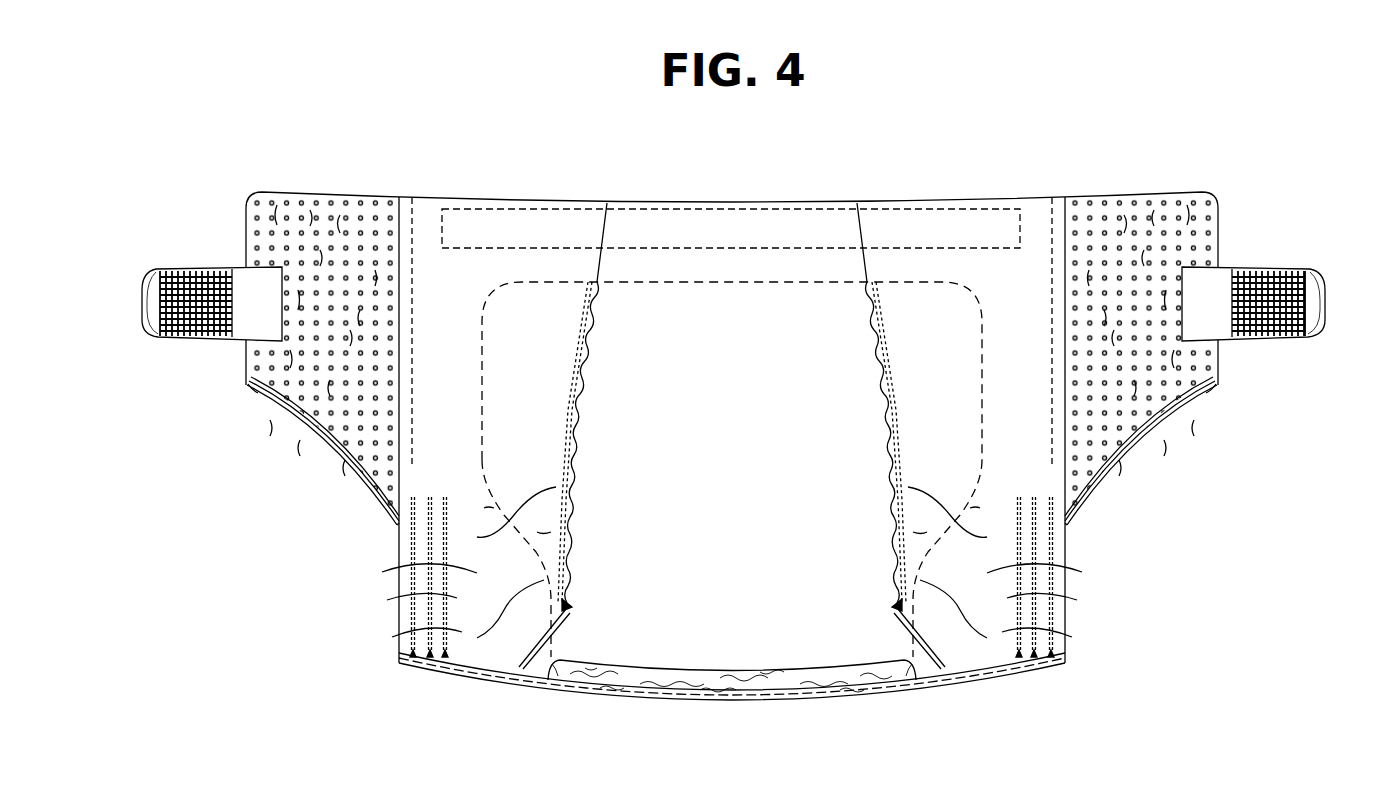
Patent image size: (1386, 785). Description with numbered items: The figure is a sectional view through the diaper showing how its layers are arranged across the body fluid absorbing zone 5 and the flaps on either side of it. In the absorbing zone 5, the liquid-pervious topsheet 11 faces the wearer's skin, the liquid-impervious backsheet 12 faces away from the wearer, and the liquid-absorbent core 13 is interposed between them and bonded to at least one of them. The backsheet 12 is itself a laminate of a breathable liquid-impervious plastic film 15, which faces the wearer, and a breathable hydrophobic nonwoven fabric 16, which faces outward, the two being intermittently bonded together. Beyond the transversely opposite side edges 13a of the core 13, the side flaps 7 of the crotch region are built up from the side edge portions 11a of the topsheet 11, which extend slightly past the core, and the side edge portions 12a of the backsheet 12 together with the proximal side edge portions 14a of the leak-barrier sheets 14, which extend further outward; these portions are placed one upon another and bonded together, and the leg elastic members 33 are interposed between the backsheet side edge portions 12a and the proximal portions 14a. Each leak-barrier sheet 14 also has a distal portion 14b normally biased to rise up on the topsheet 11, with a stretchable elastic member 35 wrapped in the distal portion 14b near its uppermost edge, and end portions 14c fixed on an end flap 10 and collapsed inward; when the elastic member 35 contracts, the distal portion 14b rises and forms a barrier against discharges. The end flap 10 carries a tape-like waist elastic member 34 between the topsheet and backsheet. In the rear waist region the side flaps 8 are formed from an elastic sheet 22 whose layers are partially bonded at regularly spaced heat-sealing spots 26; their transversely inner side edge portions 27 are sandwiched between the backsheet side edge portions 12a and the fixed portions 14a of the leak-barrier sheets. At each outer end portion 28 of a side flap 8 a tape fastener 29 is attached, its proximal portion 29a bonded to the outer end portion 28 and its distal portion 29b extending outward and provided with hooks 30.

The body fluid absorbing zone 5 is at (763, 328).
The side flaps 7 is at (734, 602).
The side flaps 8 is at (268, 192).
The end flap 10 is at (822, 268).
The topsheet 11 is at (773, 666).
The side edge portions of the topsheet 11a is at (497, 675).
The backsheet 12 is at (742, 692).
The side edge portions of the backsheet 12a is at (462, 673).
The liquid-absorbent core 13 is at (681, 670).
The side edges of the core 13a is at (562, 688).
The leak-barrier sheets 14 is at (734, 537).
The proximal side edge portion of the leak-barrier sheet 14a is at (733, 618).
The distal portion of the leak-barrier sheet 14b is at (560, 440).
The end portions of the leak-barrier sheet 14c is at (915, 268).
The plastic film 15 is at (780, 690).
The nonwoven fabric 16 is at (818, 694).
The elastic sheet 22 is at (272, 398).
The heat-sealing spots 26 is at (314, 205).
The transversely inner side edge portions 27 is at (412, 465).
The outer end portion 28 is at (247, 384).
The tape fasteners 29 is at (150, 270).
The proximal portion of the tape fastener 29a is at (244, 326).
The distal portion of the tape fastener 29b is at (152, 313).
The hooks 30 is at (200, 272).
The leg elastic members 33 is at (413, 658).
The waist elastic members 34 is at (675, 230).
The stretchable elastic member 35 is at (574, 606).